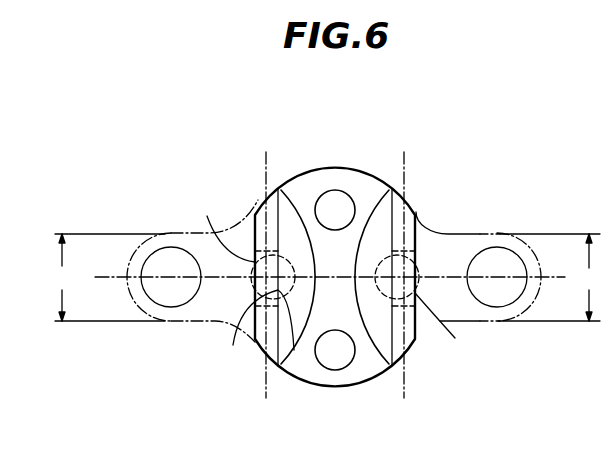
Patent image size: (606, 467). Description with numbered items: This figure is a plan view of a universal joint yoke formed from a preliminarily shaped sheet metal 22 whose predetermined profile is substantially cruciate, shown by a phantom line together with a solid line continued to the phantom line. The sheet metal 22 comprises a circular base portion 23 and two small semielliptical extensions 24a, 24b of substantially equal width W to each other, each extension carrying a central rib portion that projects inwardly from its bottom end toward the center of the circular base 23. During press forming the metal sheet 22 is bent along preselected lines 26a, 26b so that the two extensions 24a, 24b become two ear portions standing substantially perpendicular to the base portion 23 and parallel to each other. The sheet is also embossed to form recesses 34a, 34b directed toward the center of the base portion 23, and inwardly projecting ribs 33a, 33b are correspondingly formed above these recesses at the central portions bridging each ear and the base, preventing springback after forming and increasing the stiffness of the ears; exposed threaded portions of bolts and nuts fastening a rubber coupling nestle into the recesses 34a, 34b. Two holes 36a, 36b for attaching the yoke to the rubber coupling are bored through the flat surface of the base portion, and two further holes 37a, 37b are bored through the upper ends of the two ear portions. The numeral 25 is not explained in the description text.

The sheet metal 22 is at (302, 158).
The circular base portion 23 is at (368, 185).
The small semielliptical extension 24a is at (173, 283).
The small semielliptical extension 24b is at (493, 313).
The hole of link plate 25 is at (110, 280).
The preselected line 26a is at (264, 164).
The preselected line 26b is at (405, 170).
The rib 33a is at (283, 372).
The rib 33b is at (380, 372).
The recess 34a is at (255, 318).
The recess 34b is at (419, 213).
The hole 36a is at (335, 360).
The hole 36b is at (332, 200).
The hole 37a is at (240, 226).
The hole 37b is at (418, 333).
The width W is at (326, 277).